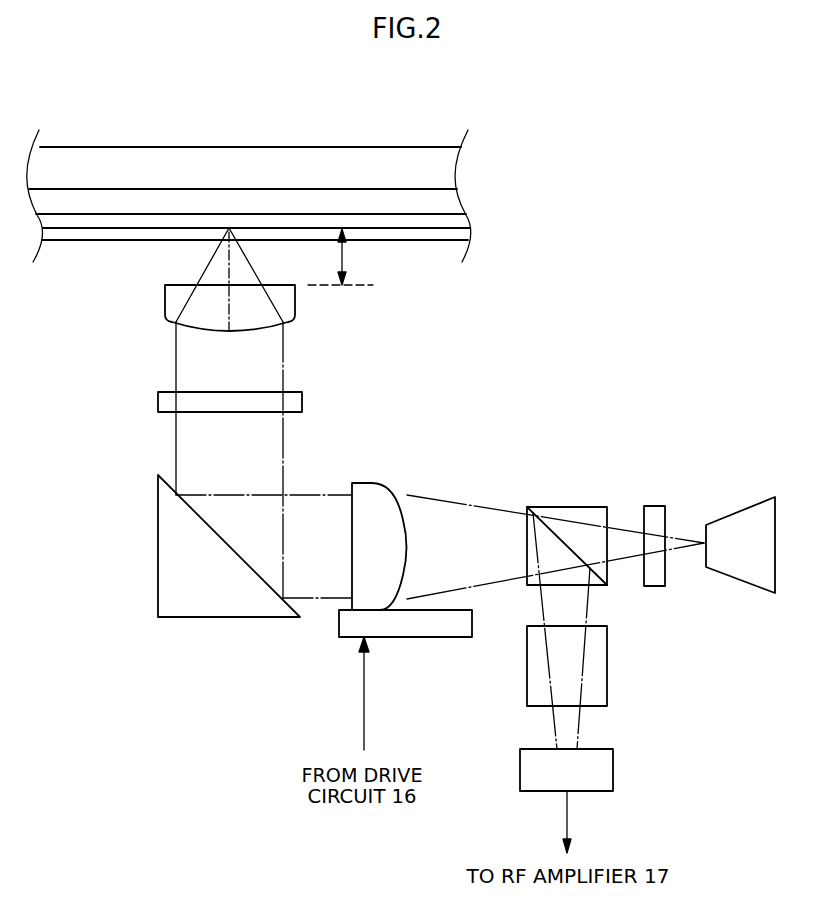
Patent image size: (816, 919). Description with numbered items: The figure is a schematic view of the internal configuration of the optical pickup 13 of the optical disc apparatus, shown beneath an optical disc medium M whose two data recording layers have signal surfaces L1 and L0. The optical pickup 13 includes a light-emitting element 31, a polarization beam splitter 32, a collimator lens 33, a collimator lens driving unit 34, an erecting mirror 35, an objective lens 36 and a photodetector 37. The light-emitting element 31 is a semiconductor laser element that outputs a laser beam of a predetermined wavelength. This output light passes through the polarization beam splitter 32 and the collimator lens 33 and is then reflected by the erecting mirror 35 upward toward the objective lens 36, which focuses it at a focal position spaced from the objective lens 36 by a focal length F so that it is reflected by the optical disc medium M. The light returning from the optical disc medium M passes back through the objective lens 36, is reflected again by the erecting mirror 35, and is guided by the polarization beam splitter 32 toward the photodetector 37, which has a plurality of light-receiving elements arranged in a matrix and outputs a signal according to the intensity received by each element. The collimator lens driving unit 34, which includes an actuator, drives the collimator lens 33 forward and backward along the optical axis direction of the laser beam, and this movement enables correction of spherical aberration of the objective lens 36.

The optical disc medium M is at (413, 146).
The signal surface L0 is at (463, 212).
The signal surface L1 is at (463, 237).
The focal length F is at (346, 254).
The optical pickup 13 is at (648, 373).
The light-emitting element 31 is at (737, 582).
The polarization beam splitter 32 is at (565, 505).
The collimator lens 33 is at (354, 483).
The collimator lens driving unit 34 is at (447, 638).
The erecting mirror 35 is at (215, 618).
The objective lens 36 is at (165, 298).
The photodetector 37 is at (613, 769).